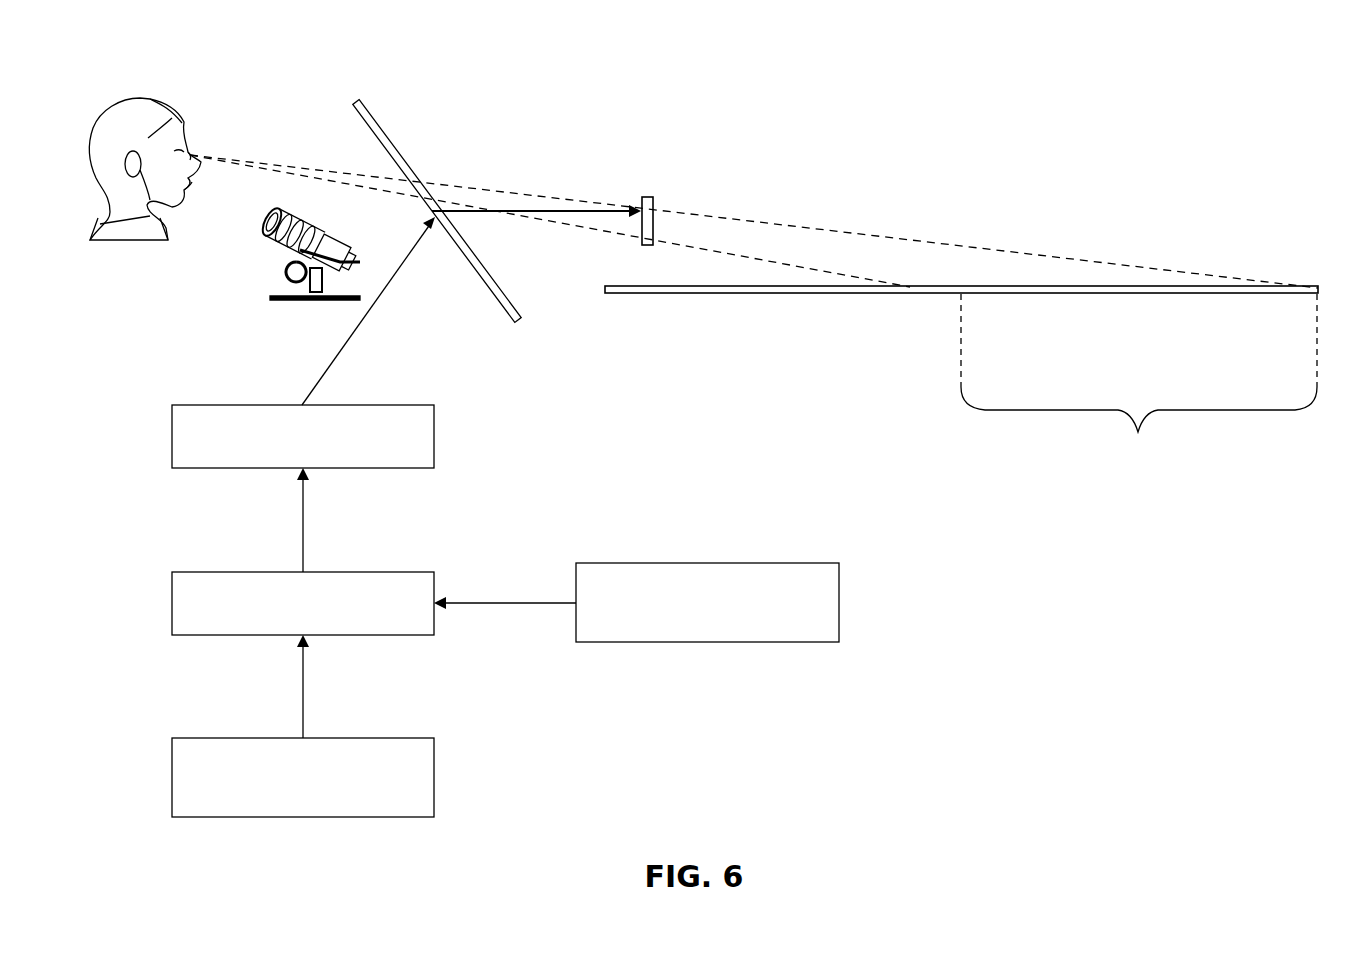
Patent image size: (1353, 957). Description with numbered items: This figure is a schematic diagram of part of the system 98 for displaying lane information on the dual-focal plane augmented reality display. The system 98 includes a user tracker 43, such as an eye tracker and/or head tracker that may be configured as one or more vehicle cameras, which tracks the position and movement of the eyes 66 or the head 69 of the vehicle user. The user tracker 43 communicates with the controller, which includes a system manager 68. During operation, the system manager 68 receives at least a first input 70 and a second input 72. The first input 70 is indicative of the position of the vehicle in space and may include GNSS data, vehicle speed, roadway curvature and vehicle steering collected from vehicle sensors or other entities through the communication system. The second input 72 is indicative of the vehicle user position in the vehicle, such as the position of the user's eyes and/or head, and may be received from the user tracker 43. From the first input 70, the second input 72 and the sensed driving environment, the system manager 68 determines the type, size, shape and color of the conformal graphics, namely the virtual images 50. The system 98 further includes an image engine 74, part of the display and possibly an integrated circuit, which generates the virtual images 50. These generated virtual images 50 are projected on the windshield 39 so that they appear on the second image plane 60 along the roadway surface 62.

The system 98 is at (1040, 97).
The head 69 is at (140, 98).
The eyes 66 is at (188, 188).
The windshield 39 is at (364, 108).
The user tracker 43 is at (270, 297).
The virtual image 50 is at (648, 197).
The roadway surface 62 is at (817, 296).
The second image plane 60 is at (1139, 381).
The image engine 74 is at (436, 437).
The system manager 68 is at (436, 585).
The first input 70 is at (436, 776).
The second input 72 is at (841, 603).